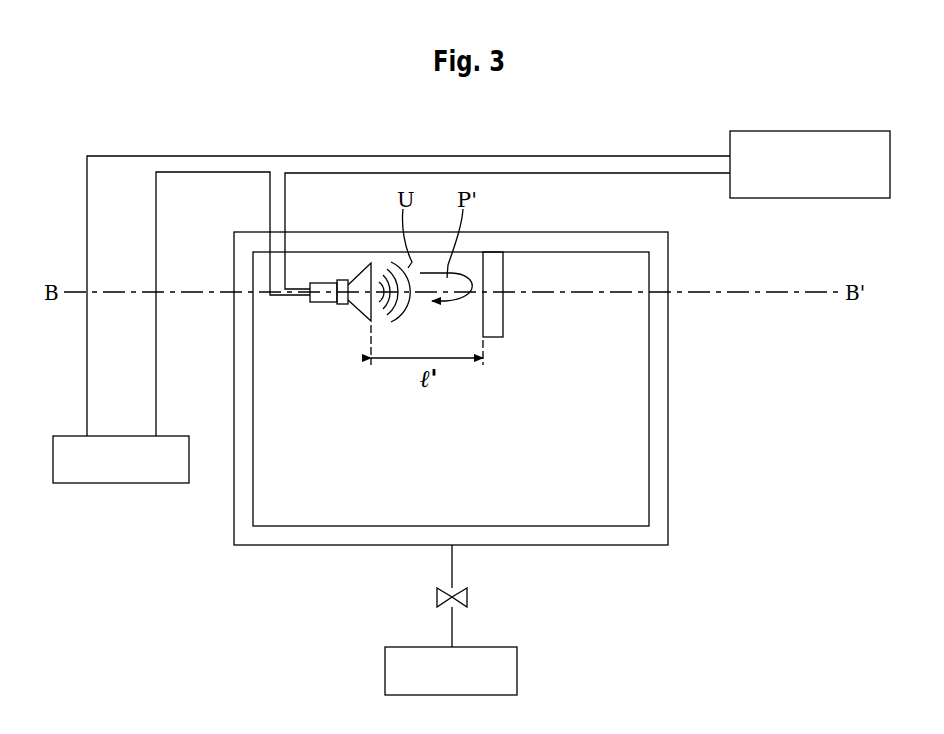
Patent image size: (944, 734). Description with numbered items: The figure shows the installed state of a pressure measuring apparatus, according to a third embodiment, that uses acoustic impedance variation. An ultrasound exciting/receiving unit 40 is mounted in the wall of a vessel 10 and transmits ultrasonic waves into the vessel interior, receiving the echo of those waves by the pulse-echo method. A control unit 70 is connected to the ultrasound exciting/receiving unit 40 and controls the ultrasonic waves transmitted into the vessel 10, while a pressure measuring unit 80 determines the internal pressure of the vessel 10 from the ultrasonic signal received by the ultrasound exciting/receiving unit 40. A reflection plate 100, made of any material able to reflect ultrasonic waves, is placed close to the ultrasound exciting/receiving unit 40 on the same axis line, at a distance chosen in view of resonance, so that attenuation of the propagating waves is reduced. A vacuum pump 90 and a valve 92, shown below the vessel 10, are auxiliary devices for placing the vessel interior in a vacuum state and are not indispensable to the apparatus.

The vessel 10 is at (613, 549).
The ultrasound exciting/receiving unit 40 is at (365, 280).
The reflection plate 100 is at (503, 290).
The pressure measuring unit 80 is at (843, 198).
The control unit 70 is at (92, 483).
The valve 92 is at (467, 597).
The vacuum pump 90 is at (517, 668).